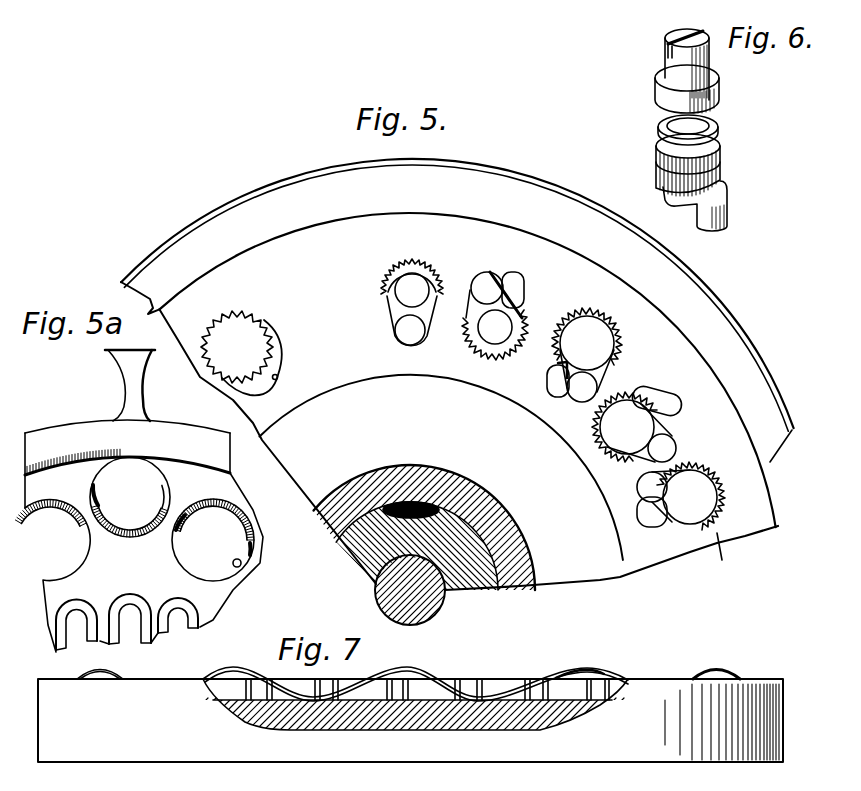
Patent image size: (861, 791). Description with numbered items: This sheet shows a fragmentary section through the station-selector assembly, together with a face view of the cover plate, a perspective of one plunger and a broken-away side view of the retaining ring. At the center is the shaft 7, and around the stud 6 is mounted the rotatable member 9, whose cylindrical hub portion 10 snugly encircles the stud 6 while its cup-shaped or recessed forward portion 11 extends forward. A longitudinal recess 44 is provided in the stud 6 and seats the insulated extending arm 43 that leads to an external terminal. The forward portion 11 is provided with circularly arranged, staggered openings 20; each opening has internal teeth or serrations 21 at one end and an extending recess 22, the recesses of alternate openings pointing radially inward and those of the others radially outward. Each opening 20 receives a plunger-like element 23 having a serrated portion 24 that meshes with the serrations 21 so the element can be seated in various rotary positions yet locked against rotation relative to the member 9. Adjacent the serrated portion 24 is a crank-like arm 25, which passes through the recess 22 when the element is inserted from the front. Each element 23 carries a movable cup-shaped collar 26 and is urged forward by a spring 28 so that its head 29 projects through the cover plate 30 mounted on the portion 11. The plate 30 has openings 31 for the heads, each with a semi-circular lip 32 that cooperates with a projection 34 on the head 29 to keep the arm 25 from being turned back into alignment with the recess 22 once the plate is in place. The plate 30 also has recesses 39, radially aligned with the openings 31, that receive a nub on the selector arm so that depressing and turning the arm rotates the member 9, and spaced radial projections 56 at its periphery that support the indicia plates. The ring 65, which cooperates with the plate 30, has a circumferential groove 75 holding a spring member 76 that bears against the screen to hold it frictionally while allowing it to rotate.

In FIG. 5, the openings 20 is at (236, 332).
In FIG. 5, the internal teeth or serrations 21 is at (268, 334).
In FIG. 5, the extending recess 22 is at (277, 378).
In FIG. 5, the plunger-like element 23 is at (400, 286).
In FIG. 6, the plunger-like element 23 is at (722, 146).
In FIG. 5, the crank-like arm 25 is at (490, 285).
In FIG. 6, the crank-like arm 25 is at (728, 211).
In FIG. 5, the rotatable member 9 is at (441, 467).
In FIG. 5, the extending arm 43 is at (411, 505).
In FIG. 5, the longitudinal recess 44 is at (448, 512).
In FIG. 5, the stud 6 is at (470, 541).
In FIG. 5, the cylindrical hub portion 10 is at (533, 561).
In FIG. 5, the shaft 7 is at (437, 601).
In FIG. 5, the cup-shaped or recessed forward portion 11 is at (730, 552).
In FIG. 5A, the radial projections 56 is at (127, 371).
In FIG. 5A, the cover plate 30 is at (60, 446).
In FIG. 5A, the openings 31 is at (163, 486).
In FIG. 5A, the semi-circular lip 32 is at (66, 504).
In FIG. 5A, the recesses 39 is at (182, 612).
In FIG. 6, the head 29 is at (670, 44).
In FIG. 6, the projection 34 is at (712, 73).
In FIG. 6, the spring 28 is at (712, 123).
In FIG. 6, the movable cup-shaped collar 26 is at (660, 137).
In FIG. 6, the serrated portion 24 is at (662, 168).
In FIG. 7, the circumferential groove or recess 75 is at (489, 684).
In FIG. 7, the spring member 76 is at (586, 673).
In FIG. 7, the ring 65 is at (680, 763).